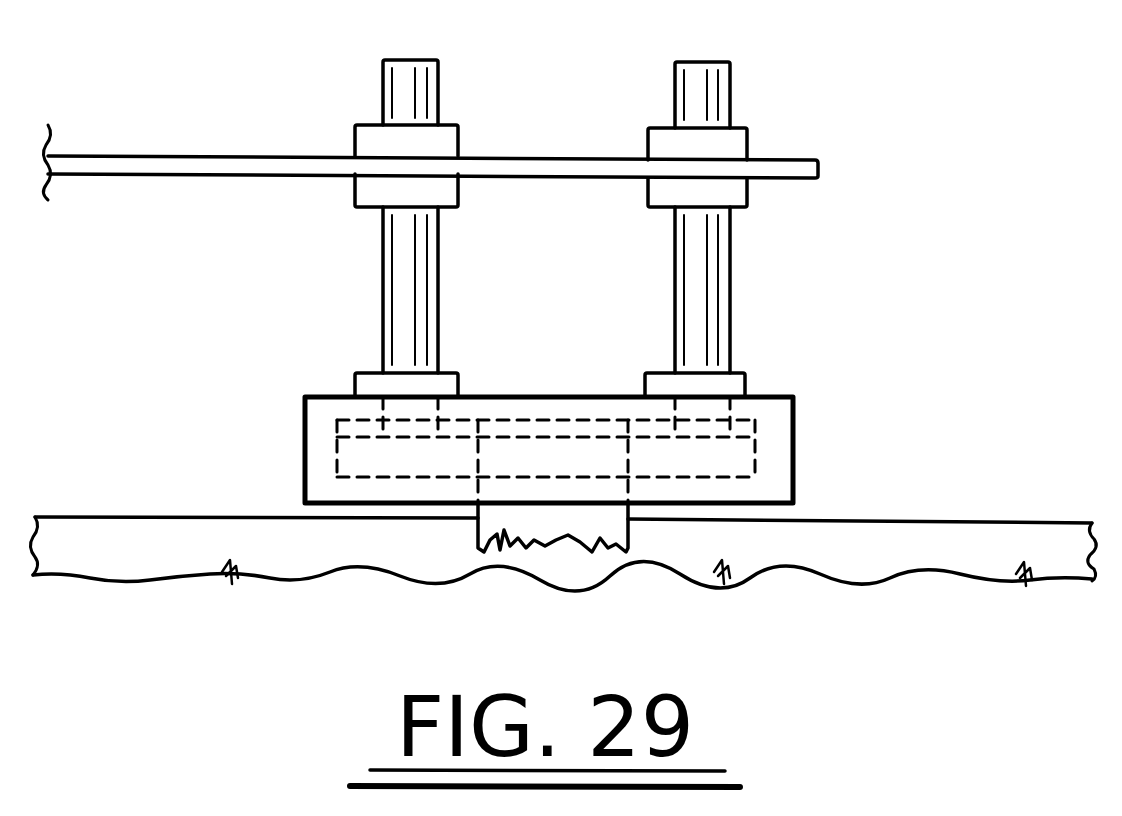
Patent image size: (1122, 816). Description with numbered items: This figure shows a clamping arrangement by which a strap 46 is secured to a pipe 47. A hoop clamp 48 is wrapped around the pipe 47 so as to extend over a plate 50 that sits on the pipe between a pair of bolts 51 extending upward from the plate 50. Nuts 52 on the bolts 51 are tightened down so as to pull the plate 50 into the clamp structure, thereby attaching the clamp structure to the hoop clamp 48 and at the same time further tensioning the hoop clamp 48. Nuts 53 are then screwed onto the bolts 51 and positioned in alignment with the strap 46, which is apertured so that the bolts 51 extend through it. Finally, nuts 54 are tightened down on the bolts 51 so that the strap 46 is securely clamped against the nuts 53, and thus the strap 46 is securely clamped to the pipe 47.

The strap 46 is at (287, 155).
The pipe 47 is at (135, 517).
The hoop clamp 48 is at (512, 528).
The plate 50 is at (350, 457).
The bolts 51 is at (398, 268).
The nuts 52 is at (360, 385).
The nuts 53 is at (383, 190).
The nuts 54 is at (453, 125).